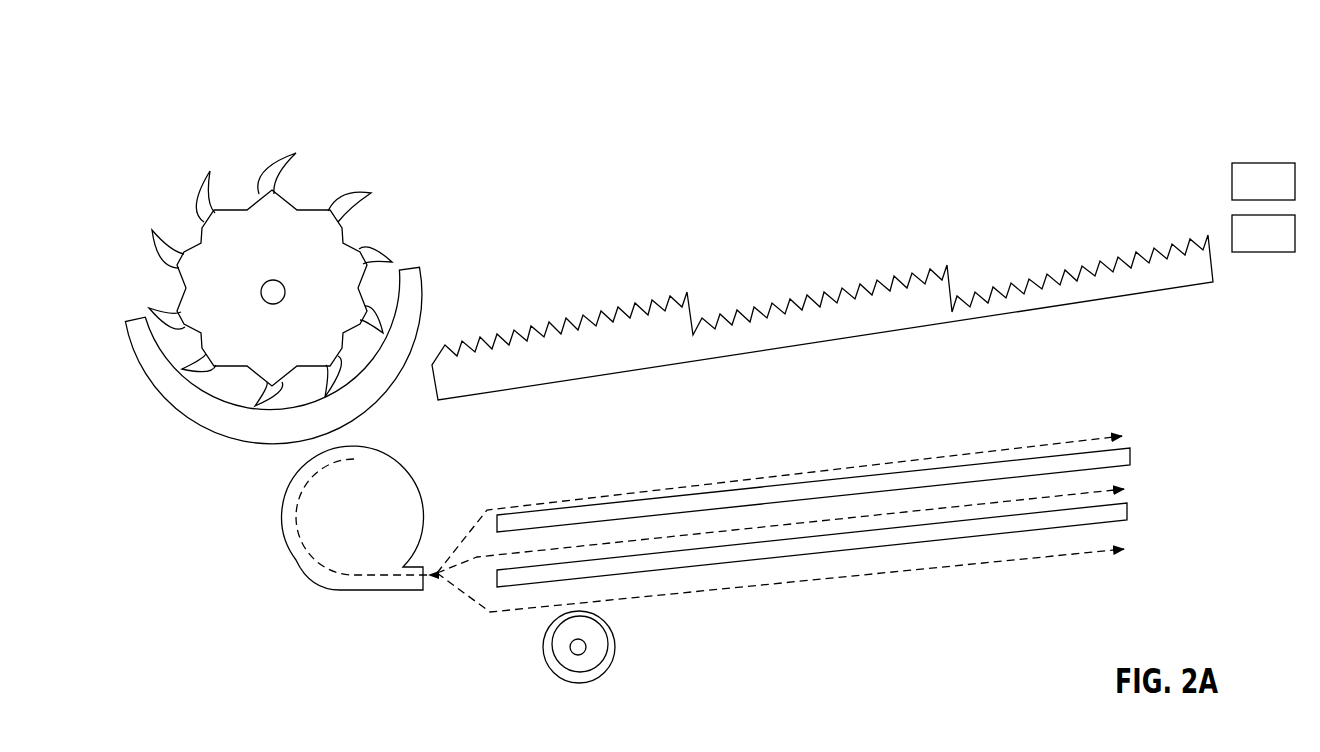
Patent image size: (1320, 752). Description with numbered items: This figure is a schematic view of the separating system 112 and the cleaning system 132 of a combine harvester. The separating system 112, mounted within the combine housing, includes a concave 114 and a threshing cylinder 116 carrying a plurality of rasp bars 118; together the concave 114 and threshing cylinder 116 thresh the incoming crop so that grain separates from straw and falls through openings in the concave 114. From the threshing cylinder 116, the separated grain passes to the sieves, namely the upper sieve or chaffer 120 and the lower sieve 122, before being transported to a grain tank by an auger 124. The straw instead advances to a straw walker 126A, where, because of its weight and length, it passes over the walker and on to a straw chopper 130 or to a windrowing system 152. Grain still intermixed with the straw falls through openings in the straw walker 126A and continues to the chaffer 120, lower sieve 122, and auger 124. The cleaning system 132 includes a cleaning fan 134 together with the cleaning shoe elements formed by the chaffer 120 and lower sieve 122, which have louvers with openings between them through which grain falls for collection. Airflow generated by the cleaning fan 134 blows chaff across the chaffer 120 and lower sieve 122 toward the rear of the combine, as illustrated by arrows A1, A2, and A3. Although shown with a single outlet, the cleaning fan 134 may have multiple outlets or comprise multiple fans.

The separating system 112 is at (392, 88).
The concave 114 is at (226, 426).
The threshing cylinder 116 is at (313, 207).
The rasp bars 118 is at (283, 168).
The chaffer 120 is at (1131, 459).
The lower sieve 122 is at (1128, 514).
The auger 124 is at (614, 657).
The straw walker 126A is at (583, 286).
The straw chopper 130 is at (1193, 214).
The cleaning system 132 is at (413, 672).
The cleaning fan 134 is at (287, 537).
The windrowing system 152 is at (1193, 208).
The arrow A1 is at (978, 450).
The arrow A2 is at (1050, 495).
The arrow A3 is at (1000, 556).